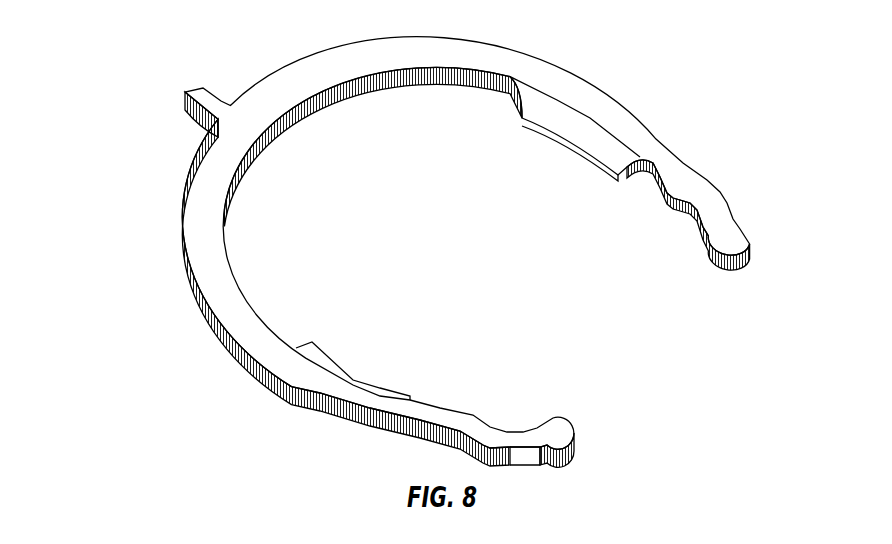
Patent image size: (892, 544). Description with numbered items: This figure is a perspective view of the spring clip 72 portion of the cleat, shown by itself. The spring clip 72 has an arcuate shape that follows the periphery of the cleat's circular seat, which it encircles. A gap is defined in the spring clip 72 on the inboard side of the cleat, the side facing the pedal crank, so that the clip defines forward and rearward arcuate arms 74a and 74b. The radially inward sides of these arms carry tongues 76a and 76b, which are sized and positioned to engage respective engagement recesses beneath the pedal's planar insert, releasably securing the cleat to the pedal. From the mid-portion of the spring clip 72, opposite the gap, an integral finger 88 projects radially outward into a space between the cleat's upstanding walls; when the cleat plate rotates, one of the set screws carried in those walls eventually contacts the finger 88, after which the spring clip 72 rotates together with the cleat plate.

The spring clip 72 is at (140, 315).
The forward arcuate arm 74a is at (683, 166).
The rearward arcuate arm 74b is at (320, 393).
The tongue 76a is at (543, 102).
The tongue 76b is at (355, 378).
The integral finger 88 is at (202, 100).